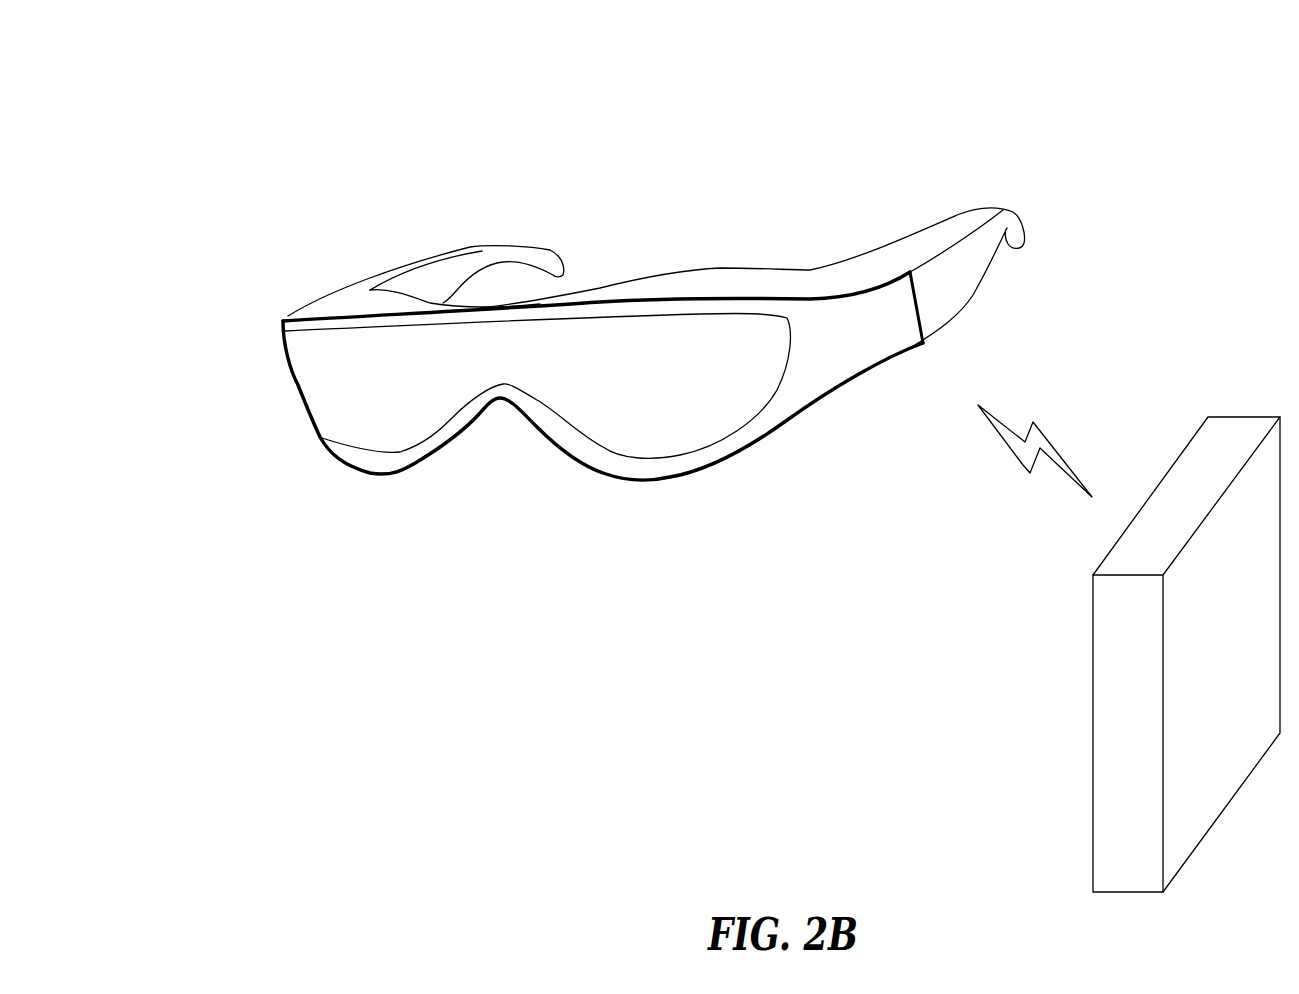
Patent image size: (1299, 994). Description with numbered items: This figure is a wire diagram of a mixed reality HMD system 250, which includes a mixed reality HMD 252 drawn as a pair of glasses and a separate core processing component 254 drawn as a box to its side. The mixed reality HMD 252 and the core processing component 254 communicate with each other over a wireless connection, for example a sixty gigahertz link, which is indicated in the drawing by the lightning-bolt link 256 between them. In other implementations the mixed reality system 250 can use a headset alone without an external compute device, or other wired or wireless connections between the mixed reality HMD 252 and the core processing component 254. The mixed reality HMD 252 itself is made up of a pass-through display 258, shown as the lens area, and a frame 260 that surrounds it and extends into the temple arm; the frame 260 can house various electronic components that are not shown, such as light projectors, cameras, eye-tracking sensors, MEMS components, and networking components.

The mixed reality HMD system 250 is at (240, 123).
The mixed reality HMD 252 is at (283, 330).
The core processing component 254 is at (1093, 655).
The link 256 is at (1023, 466).
The pass-through display 258 is at (790, 320).
The frame 260 is at (948, 280).